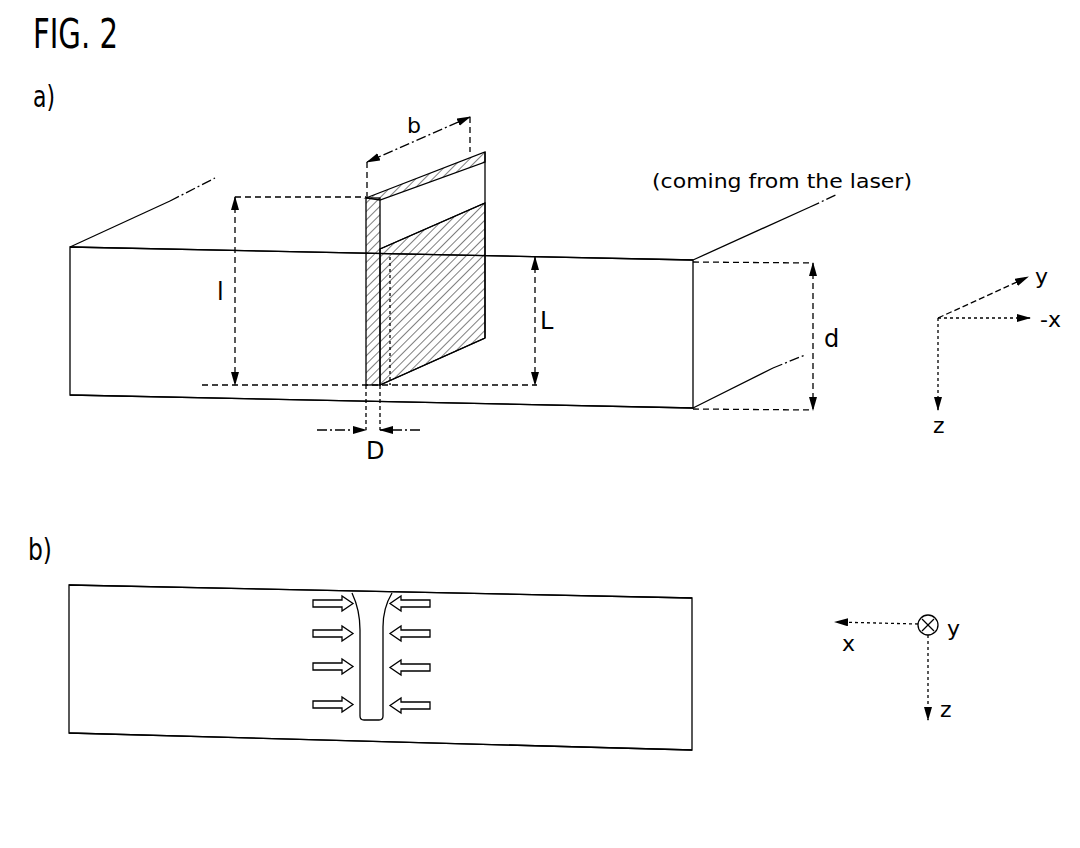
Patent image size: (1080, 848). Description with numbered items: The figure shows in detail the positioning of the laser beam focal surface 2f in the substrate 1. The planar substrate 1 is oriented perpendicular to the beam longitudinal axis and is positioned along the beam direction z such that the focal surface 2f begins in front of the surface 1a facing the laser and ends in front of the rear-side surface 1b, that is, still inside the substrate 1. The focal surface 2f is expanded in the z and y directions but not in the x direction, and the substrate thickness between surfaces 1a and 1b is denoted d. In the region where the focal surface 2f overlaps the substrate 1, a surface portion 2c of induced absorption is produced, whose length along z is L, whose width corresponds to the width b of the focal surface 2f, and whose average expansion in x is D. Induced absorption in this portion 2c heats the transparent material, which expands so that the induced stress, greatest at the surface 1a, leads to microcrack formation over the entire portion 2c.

The planar substrate 1 is at (682, 333).
The surface of the planar substrate 1a is at (140, 238).
The rear-side surface of the substrate 1b is at (233, 403).
The surface portion of induced absorption 2c is at (390, 310).
The laser beam focal surface 2f is at (362, 200).